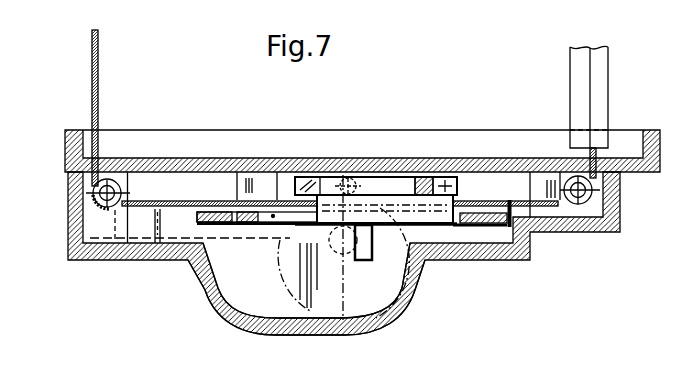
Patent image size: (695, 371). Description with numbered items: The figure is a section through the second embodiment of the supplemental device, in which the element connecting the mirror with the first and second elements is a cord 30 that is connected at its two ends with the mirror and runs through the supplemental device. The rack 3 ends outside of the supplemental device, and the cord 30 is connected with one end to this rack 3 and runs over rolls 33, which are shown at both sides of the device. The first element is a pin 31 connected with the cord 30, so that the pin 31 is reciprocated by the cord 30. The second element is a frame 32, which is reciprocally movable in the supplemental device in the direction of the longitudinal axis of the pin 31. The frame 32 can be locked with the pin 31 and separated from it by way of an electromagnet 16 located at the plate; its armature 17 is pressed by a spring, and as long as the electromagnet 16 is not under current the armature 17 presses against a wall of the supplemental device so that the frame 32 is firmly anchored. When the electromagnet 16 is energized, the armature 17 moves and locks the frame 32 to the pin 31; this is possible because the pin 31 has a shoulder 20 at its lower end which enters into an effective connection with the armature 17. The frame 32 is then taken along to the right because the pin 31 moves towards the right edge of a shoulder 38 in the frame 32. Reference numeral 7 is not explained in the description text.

The rack 3 is at (598, 104).
The top plate 7 is at (411, 146).
The electromagnet 16 is at (296, 272).
The armature 17 is at (337, 252).
The shoulder 20 is at (424, 278).
The cord 30 is at (98, 88).
The pin 31 is at (375, 205).
The frame 32 is at (236, 204).
The rolls 33 is at (68, 191).
The shoulder 38 is at (273, 213).